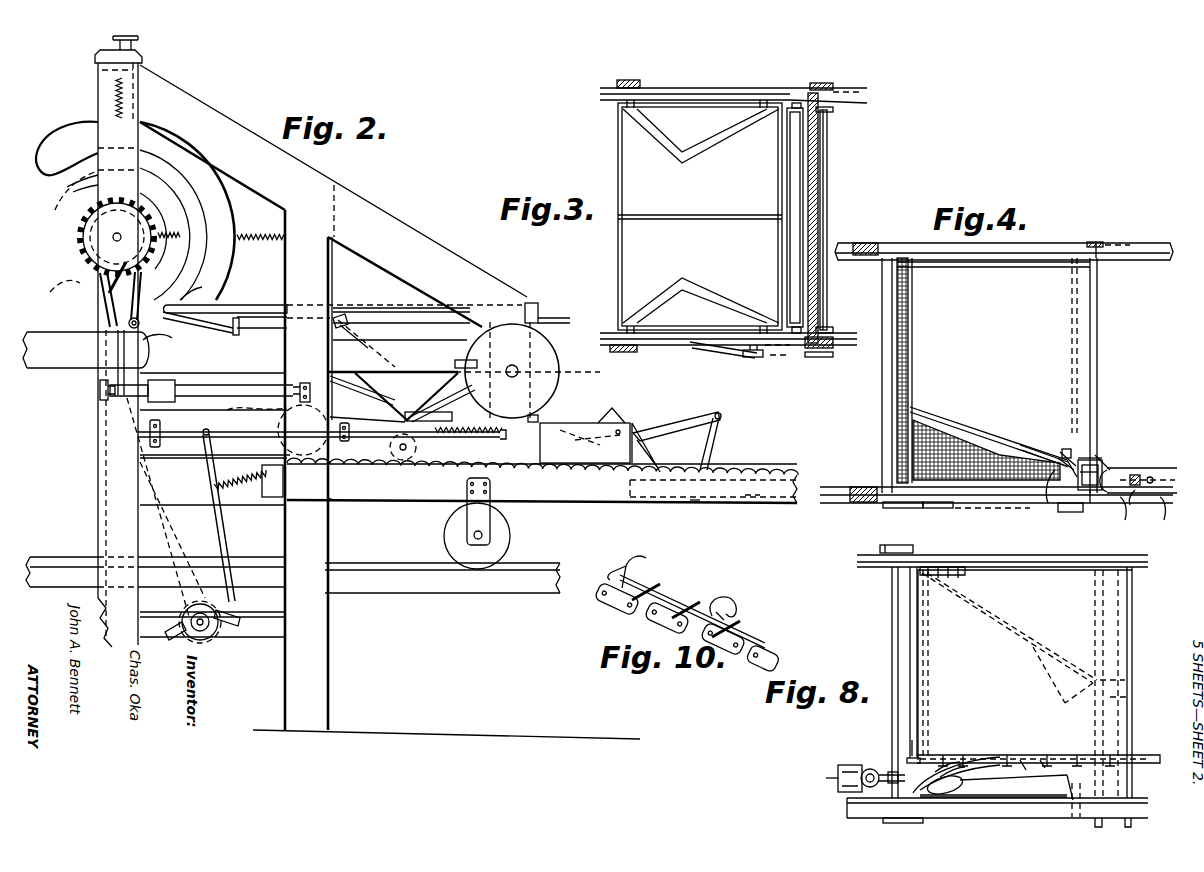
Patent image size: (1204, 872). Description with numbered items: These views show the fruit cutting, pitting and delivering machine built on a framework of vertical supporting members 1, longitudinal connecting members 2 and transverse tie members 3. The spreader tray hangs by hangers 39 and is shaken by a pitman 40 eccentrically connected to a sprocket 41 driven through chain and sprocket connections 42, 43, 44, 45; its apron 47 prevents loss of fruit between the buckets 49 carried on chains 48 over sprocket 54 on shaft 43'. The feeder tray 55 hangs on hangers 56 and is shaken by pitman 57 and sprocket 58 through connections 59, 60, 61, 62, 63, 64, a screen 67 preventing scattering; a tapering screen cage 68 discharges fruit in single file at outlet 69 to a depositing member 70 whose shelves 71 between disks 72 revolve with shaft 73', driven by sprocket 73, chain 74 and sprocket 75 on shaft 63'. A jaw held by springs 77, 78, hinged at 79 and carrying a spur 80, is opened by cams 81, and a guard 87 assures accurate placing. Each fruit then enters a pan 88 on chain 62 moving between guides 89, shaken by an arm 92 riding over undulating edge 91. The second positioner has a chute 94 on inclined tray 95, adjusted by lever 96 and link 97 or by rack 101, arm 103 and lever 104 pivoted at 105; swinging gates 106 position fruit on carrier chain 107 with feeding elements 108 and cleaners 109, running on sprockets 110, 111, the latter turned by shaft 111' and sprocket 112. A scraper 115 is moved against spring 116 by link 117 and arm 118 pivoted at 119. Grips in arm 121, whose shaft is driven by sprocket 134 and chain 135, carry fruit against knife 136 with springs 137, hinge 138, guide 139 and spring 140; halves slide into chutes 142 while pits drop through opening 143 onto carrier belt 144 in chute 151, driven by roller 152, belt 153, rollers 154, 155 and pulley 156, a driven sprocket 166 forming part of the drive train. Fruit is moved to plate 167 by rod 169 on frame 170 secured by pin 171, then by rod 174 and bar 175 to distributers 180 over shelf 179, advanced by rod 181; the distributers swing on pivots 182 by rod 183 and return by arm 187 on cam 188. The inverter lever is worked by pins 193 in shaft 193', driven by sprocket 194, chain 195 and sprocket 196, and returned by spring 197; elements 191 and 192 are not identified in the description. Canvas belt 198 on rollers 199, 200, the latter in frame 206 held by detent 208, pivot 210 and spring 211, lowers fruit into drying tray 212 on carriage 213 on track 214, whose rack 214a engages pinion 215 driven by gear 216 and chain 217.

In FIG. 2, the vertical supporting members 1 is at (95, 598).
In FIG. 3, the vertical supporting members 1 is at (617, 84).
In FIG. 4, the vertical supporting members 1 is at (868, 257).
In FIG. 2, the longitudinally positioned connecting members 2 is at (197, 112).
In FIG. 3, the longitudinally positioned connecting members 2 is at (702, 94).
In FIG. 4, the longitudinally positioned connecting members 2 is at (986, 262).
In FIG. 8, the longitudinally positioned connecting members 2 is at (1022, 562).
In FIG. 3, the transverse tie members 3 is at (822, 192).
In FIG. 8, the transverse tie members 3 is at (1025, 665).
In FIG. 3, the hangers 39 is at (640, 100).
In FIG. 3, the pitman 40 is at (710, 350).
In FIG. 3, the sprocket 41 is at (764, 357).
In FIG. 3, the chain and sprocket connection 42 is at (790, 356).
In FIG. 3, the chain and sprocket connection 43 is at (822, 359).
In FIG. 3, the shaft 43' is at (841, 220).
In FIG. 3, the chain and sprocket connection 44 is at (815, 83).
In FIG. 3, the chain and sprocket connection 45 is at (870, 92).
In FIG. 3, the apron 47 is at (778, 283).
In FIG. 3, the chains 48 is at (832, 110).
In FIG. 3, the buckets 49 is at (795, 184).
In FIG. 3, the sprocket 54 is at (826, 124).
In FIG. 4, the tray 55 is at (1066, 343).
In FIG. 4, the hangers 56 is at (920, 263).
In FIG. 4, the pitman 57 is at (900, 508).
In FIG. 4, the sprocket 58 is at (953, 508).
In FIG. 4, the chain and sprocket connection 59 is at (1002, 508).
In FIG. 4, the chain and sprocket connection 60 is at (1070, 512).
In FIG. 4, the chain and sprocket connection 61 is at (1050, 505).
In FIG. 4, the chain 62 is at (1144, 466).
In FIG. 8, the chain 62 is at (868, 768).
In FIG. 8, the chain and sprocket connection 63 is at (892, 762).
In FIG. 8, the shaft 63' is at (883, 682).
In FIG. 8, the chain and sprocket connection 64 is at (880, 821).
In FIG. 4, the screen 67 is at (910, 350).
In FIG. 4, the tapering screen cage 68 is at (955, 432).
In FIG. 4, the outlet 69 is at (1020, 470).
In FIG. 4, the depositing member 70 is at (1092, 492).
In FIG. 4, the shelves 71 is at (1098, 462).
In FIG. 4, the disks 72 is at (1100, 467).
In FIG. 4, the sprocket 73 is at (1111, 264).
In FIG. 4, the shaft 73' is at (1113, 375).
In FIG. 4, the chain 74 is at (1128, 250).
In FIG. 4, the sprocket 75 is at (895, 546).
In FIG. 4, the spring 77 is at (1060, 450).
In FIG. 4, the spring 78 is at (1062, 452).
In FIG. 4, the hinge 79 is at (1035, 448).
In FIG. 4, the spur 80 is at (1090, 452).
In FIG. 4, the cams 81 is at (1105, 458).
In FIG. 4, the guard 87 is at (1132, 503).
In FIG. 4, the pan 88 is at (1140, 470).
In FIG. 8, the pan 88 is at (850, 790).
In FIG. 4, the inclined guides 89 is at (1162, 475).
In FIG. 8, the inclined guides 89 is at (847, 765).
In FIG. 4, the undulating edge 91 is at (1163, 522).
In FIG. 4, the arm 92 is at (1125, 522).
In FIG. 8, the chute 94 is at (968, 762).
In FIG. 8, the inclined tray 95 is at (1132, 625).
In FIG. 8, the lever 96 is at (1131, 824).
In FIG. 8, the link 97 is at (1131, 681).
In FIG. 8, the rack 101 is at (948, 575).
In FIG. 8, the arm 103 is at (1040, 722).
In FIG. 8, the lever 104 is at (1110, 827).
In FIG. 8, the pivot 105 is at (1085, 700).
In FIG. 8, the gates 106 is at (940, 767).
In FIG. 8, the carrier chain 107 is at (1022, 756).
In FIG. 10, the carrier chain 107 is at (668, 600).
In FIG. 8, the feeding elements 108 is at (1010, 757).
In FIG. 10, the feeding elements 108 is at (736, 602).
In FIG. 8, the cleaners 109 is at (1048, 757).
In FIG. 10, the cleaners 109 is at (640, 566).
In FIG. 8, the sprocket 110 is at (1133, 760).
In FIG. 8, the sprocket 111 is at (891, 736).
In FIG. 8, the shaft 111' is at (894, 665).
In FIG. 8, the sprocket 112 is at (923, 822).
In FIG. 8, the scraper 115 is at (946, 785).
In FIG. 8, the spring 116 is at (962, 790).
In FIG. 8, the link 117 is at (990, 783).
In FIG. 8, the arm 118 is at (1066, 791).
In FIG. 8, the pivot 119 is at (1086, 796).
In FIG. 2, the arm 121 is at (112, 240).
In FIG. 2, the sprocket 134 is at (78, 236).
In FIG. 2, the chain 135 is at (70, 290).
In FIG. 2, the knife 136 is at (56, 150).
In FIG. 2, the springs 137 is at (113, 93).
In FIG. 2, the hinge 138 is at (200, 288).
In FIG. 2, the guide 139 is at (67, 187).
In FIG. 2, the spring 140 is at (170, 233).
In FIG. 2, the chutes 142 is at (202, 317).
In FIG. 2, the opening 143 is at (210, 304).
In FIG. 2, the carrier belt 144 is at (165, 392).
In FIG. 2, the chute 151 is at (115, 362).
In FIG. 2, the roller 152 is at (100, 398).
In FIG. 2, the belt 153 is at (115, 370).
In FIG. 2, the roller 154 is at (105, 334).
In FIG. 2, the roller 155 is at (170, 339).
In FIG. 2, the pulley 156 is at (110, 298).
In FIG. 2, the driven sprocket 166 is at (517, 369).
In FIG. 2, the plate 167 is at (237, 334).
In FIG. 2, the rod 169 is at (402, 312).
In FIG. 2, the frame 170 is at (542, 316).
In FIG. 2, the pin 171 is at (533, 305).
In FIG. 2, the rod 174 is at (342, 310).
In FIG. 2, the bar 175 is at (336, 268).
In FIG. 2, the shelf 179 is at (385, 416).
In FIG. 2, the distributers 180 is at (392, 386).
In FIG. 2, the rod 181 is at (372, 398).
In FIG. 2, the pivots 182 is at (355, 335).
In FIG. 2, the rod 183 is at (438, 366).
In FIG. 2, the arm 187 is at (465, 360).
In FIG. 2, the cam 188 is at (556, 369).
In FIG. 2, the spring 191 is at (455, 440).
In FIG. 2, the rod 192 is at (220, 540).
In FIG. 2, the pins 193 is at (168, 639).
In FIG. 2, the shaft 193' is at (236, 630).
In FIG. 2, the sprocket 194 is at (203, 632).
In FIG. 2, the chain 195 is at (157, 530).
In FIG. 2, the sprocket 196 is at (94, 212).
In FIG. 2, the spring 197 is at (242, 487).
In FIG. 2, the canvas belt 198 is at (642, 452).
In FIG. 2, the roller 199 is at (392, 455).
In FIG. 2, the roller 200 is at (715, 489).
In FIG. 2, the frame 206 is at (657, 420).
In FIG. 2, the detent 208 is at (603, 414).
In FIG. 2, the pivot 210 is at (576, 424).
In FIG. 2, the spring 211 is at (492, 520).
In FIG. 2, the drying tray 212 is at (752, 496).
In FIG. 2, the carriage 213 is at (695, 502).
In FIG. 2, the track 214 is at (532, 566).
In FIG. 2, the rack 214a is at (730, 466).
In FIG. 2, the pinion 215 is at (330, 500).
In FIG. 2, the gear 216 is at (285, 440).
In FIG. 2, the chain 217 is at (242, 408).